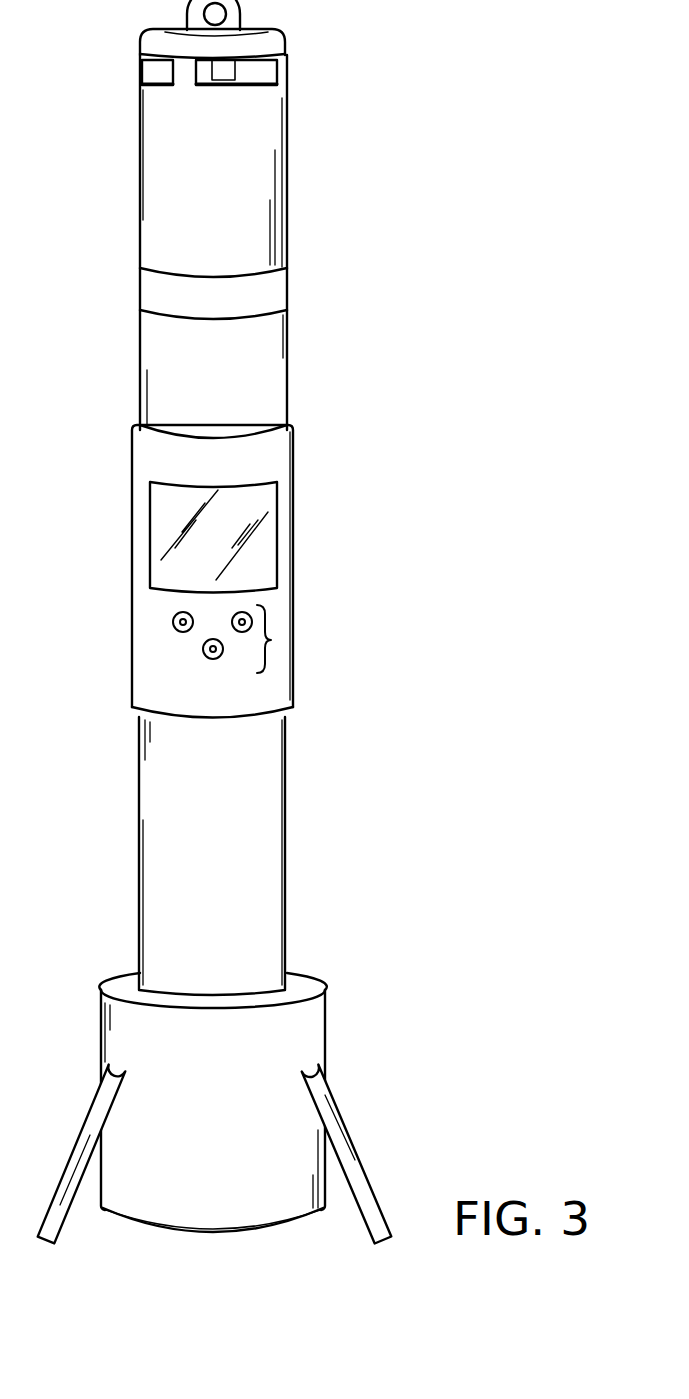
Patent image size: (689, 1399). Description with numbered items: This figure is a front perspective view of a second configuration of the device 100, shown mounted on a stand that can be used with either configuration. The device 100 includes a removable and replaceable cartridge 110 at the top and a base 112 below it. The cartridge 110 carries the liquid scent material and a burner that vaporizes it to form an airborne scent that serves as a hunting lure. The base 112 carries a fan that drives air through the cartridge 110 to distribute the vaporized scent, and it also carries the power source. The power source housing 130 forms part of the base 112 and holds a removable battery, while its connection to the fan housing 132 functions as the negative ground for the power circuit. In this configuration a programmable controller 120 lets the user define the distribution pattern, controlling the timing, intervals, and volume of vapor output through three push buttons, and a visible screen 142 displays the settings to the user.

The device 100 is at (428, 407).
The cartridge 110 is at (243, 183).
The base 112 is at (267, 683).
The controller 120 is at (268, 640).
The power source housing 130 is at (252, 860).
The fan housing 132 is at (273, 705).
The visible screen 142 is at (253, 508).